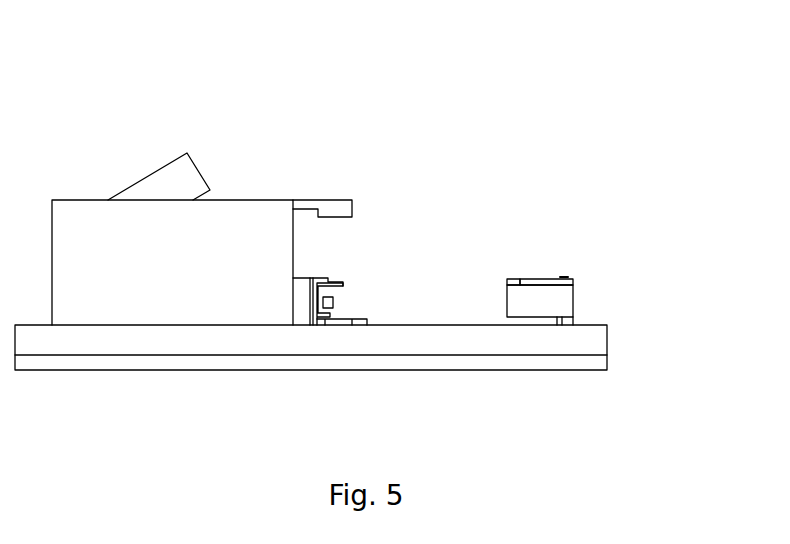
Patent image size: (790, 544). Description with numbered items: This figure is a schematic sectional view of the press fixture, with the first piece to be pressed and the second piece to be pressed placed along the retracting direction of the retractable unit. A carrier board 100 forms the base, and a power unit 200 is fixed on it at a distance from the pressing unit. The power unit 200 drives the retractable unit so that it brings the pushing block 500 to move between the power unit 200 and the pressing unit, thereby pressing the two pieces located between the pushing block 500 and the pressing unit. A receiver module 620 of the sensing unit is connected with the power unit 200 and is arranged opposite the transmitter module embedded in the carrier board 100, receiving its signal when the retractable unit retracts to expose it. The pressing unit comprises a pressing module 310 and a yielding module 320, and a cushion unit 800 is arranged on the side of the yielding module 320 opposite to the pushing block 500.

The carrier board 100 is at (427, 343).
The power unit 200 is at (77, 217).
The receiver module 620 is at (335, 205).
The pushing block 500 is at (305, 303).
The pressing module 310 is at (560, 300).
The yielding module 320 is at (543, 279).
The cushion unit 800 is at (523, 279).